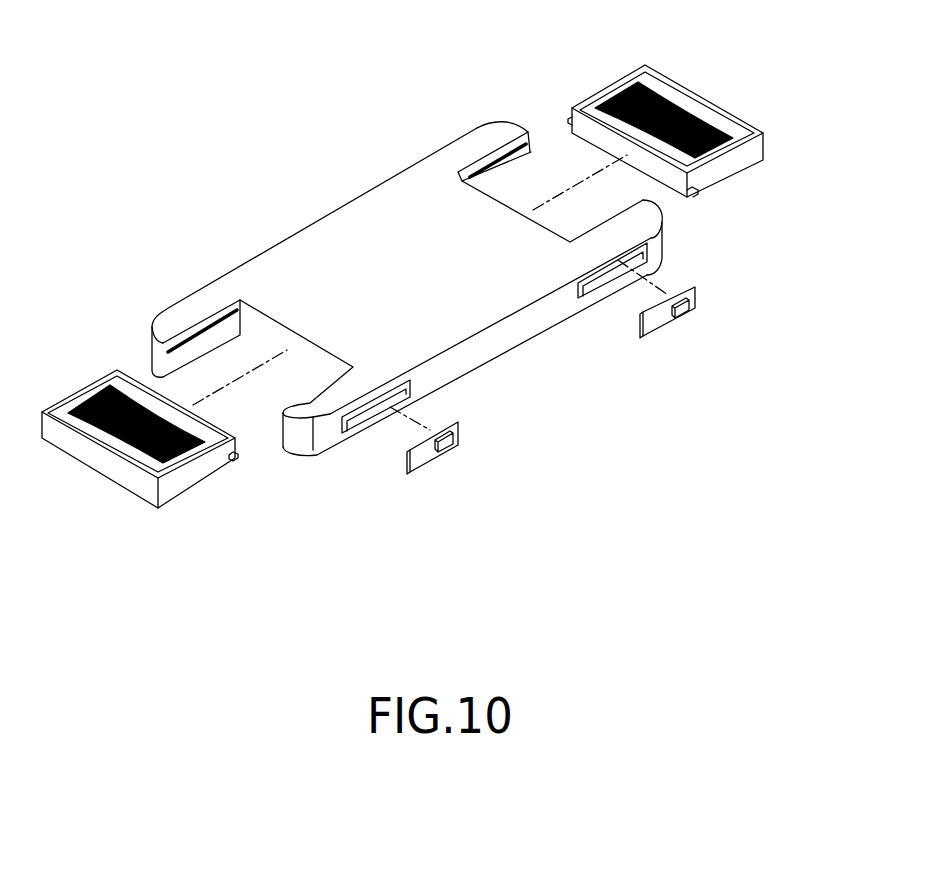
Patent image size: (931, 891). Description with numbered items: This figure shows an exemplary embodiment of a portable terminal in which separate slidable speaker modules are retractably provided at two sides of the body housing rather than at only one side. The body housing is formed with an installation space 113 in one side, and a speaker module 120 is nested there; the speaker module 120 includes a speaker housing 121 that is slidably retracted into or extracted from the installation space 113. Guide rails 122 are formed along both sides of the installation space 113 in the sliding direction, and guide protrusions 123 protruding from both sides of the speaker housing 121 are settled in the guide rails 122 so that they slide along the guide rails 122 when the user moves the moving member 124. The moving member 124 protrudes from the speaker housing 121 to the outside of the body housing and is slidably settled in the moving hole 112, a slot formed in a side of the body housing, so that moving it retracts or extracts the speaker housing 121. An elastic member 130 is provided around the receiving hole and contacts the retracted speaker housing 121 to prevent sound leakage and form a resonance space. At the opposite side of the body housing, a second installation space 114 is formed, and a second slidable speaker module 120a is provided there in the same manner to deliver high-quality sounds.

The moving hole 112 is at (648, 252).
The installation space 113 is at (520, 204).
The second installation space 114 is at (277, 380).
The speaker module 120 is at (681, 133).
The second slidable speaker module 120a is at (197, 503).
The speaker housing 121 is at (728, 166).
The guide rails 122 is at (530, 146).
The guide protrusions 123 is at (698, 193).
The moving member 124 is at (683, 313).
The elastic member 130 is at (795, 207).